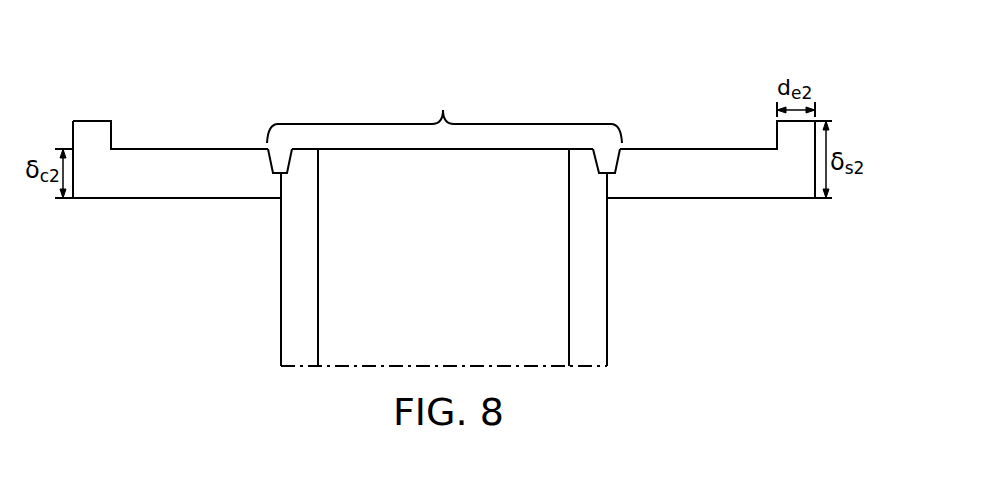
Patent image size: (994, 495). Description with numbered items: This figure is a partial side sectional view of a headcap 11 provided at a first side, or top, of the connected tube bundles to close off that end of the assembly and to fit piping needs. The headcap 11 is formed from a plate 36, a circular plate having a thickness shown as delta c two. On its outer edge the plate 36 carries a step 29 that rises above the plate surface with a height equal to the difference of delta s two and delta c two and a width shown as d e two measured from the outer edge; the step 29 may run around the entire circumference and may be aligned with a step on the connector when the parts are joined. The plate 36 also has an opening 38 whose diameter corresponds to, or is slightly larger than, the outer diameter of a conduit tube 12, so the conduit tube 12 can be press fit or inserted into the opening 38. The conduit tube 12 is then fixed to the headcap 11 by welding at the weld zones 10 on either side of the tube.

The step 29 is at (91, 121).
The weld zones 10 is at (282, 152).
The opening 38 is at (444, 111).
The plate 36 is at (710, 147).
The headcap 11 is at (710, 183).
The conduit tube 12 is at (295, 270).